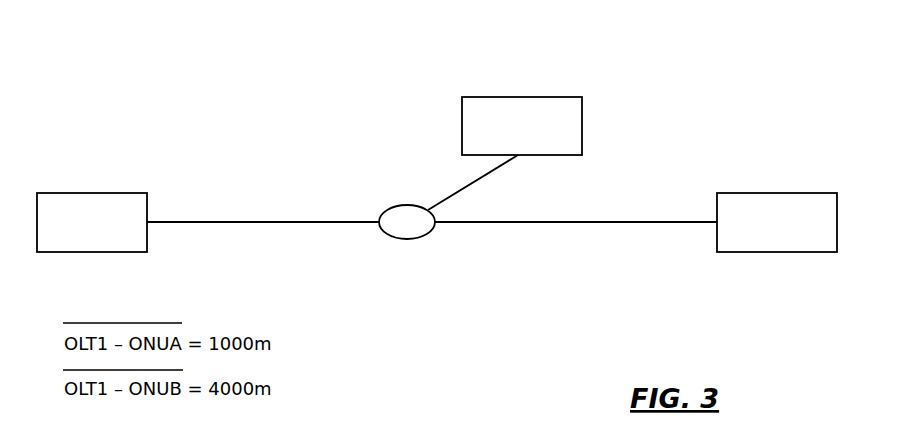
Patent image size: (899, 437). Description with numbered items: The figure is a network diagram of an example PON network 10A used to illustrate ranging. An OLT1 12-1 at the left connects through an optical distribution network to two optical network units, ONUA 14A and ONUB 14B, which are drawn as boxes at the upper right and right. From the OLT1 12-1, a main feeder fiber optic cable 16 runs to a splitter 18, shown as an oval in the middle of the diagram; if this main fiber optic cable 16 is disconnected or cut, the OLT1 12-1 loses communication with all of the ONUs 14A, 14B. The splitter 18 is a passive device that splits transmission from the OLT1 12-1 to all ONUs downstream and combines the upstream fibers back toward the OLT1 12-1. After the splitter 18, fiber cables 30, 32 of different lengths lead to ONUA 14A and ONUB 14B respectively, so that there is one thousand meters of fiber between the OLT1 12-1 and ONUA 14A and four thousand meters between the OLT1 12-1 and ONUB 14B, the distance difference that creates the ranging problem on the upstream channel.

The PON network 10A is at (704, 64).
The OLT1 12-1 is at (92, 222).
The ONUA 14A is at (522, 126).
The ONUB 14B is at (777, 222).
The main feeder fiber optic cable 16 is at (260, 222).
The splitter 18 is at (403, 239).
The fiber cable 30 is at (448, 197).
The fiber cable 32 is at (568, 222).